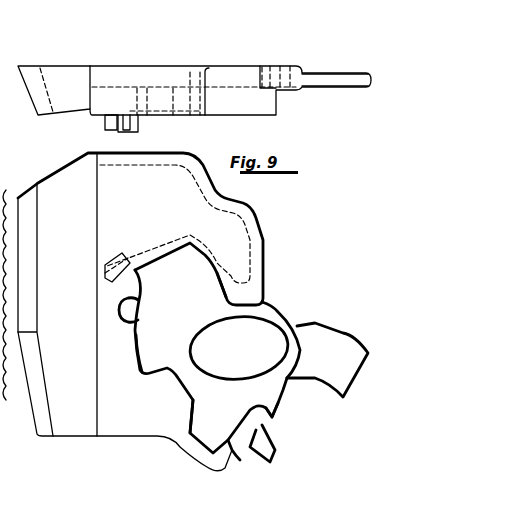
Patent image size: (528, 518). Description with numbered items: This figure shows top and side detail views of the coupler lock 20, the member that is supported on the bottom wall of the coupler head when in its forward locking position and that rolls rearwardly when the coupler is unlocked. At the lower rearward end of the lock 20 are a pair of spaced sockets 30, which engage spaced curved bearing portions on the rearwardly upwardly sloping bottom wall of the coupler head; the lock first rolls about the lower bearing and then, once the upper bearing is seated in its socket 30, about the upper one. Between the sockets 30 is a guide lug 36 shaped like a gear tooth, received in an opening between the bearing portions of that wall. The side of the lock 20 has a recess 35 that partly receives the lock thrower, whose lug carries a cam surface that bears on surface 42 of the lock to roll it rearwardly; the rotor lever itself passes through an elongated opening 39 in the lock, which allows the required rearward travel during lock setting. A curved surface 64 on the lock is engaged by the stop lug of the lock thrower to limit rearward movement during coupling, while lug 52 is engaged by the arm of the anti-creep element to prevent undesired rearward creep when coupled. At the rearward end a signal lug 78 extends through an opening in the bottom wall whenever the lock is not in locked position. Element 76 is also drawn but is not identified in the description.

The lock 20 is at (60, 66).
The sockets 30 is at (273, 417).
The recess 35 is at (153, 338).
The guide lug 36 is at (280, 73).
The elongated opening 39 is at (192, 73).
The surface 42 is at (212, 277).
The lug 52 is at (105, 125).
The curved surface 64 is at (183, 387).
The pin 76 is at (138, 127).
The signal lug 78 is at (327, 73).